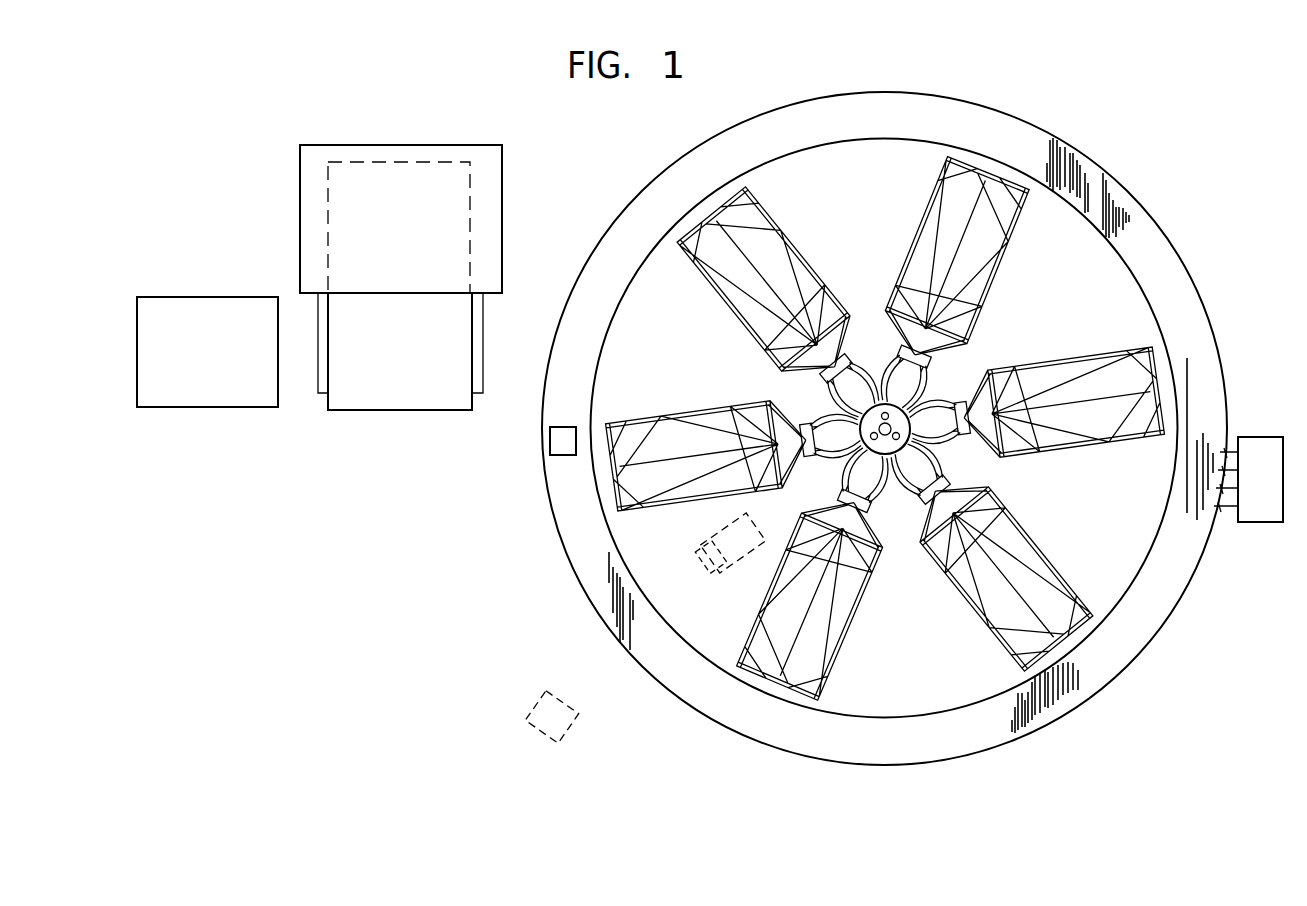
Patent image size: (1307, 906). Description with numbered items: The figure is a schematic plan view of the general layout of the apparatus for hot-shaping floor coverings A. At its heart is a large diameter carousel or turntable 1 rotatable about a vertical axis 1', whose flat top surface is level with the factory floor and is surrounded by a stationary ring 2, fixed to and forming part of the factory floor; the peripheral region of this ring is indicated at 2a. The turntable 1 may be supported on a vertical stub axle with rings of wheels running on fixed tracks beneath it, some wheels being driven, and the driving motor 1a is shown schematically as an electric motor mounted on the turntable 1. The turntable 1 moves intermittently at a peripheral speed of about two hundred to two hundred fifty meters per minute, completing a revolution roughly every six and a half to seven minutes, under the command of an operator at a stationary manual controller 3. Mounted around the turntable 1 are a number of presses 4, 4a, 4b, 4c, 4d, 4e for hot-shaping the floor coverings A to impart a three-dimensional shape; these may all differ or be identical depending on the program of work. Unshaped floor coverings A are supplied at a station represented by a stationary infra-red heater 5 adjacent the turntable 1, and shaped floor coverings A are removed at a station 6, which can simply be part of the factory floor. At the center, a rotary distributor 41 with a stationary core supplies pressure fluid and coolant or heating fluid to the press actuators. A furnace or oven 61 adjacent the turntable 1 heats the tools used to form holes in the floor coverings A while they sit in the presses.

The turntable 1 is at (863, 428).
The vertical axis 1' is at (933, 452).
The driving motor 1a is at (714, 572).
The stationary ring 2 is at (667, 672).
The ring edge 2a is at (1053, 796).
The stationary manual controller 3 is at (556, 438).
The press 4 is at (869, 607).
The press 4a is at (1057, 566).
The press 4b is at (1055, 356).
The press 4c is at (899, 246).
The press 4d is at (706, 290).
The press 4e is at (682, 407).
The stationary infra-red heater 5 is at (308, 209).
The station 6 is at (537, 706).
The rotary distributor 41 is at (886, 461).
The furnace or oven 61 is at (1262, 438).
The floor covering A is at (347, 398).